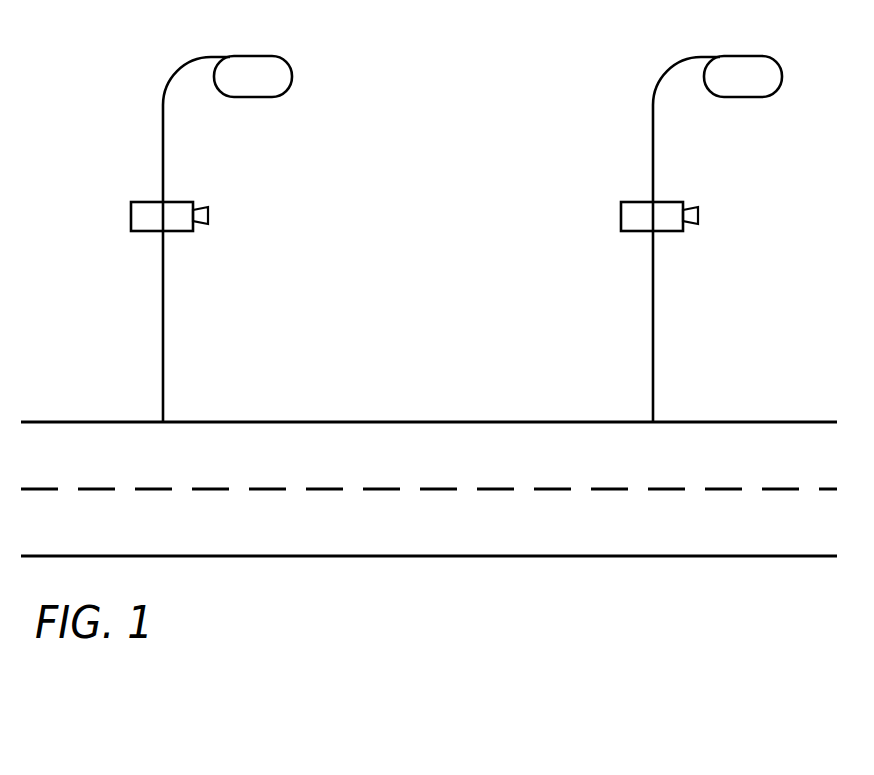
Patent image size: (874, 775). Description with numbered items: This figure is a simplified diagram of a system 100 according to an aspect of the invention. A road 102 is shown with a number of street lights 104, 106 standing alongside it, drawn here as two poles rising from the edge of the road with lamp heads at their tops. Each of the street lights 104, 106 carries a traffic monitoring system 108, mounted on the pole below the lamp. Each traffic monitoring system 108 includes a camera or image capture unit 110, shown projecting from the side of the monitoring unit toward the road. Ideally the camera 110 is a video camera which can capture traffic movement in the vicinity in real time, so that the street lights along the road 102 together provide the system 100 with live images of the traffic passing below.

The system 100 is at (114, 49).
The road 102 is at (415, 420).
The street light 104 is at (163, 332).
The street light 106 is at (653, 332).
The traffic monitoring system 108 is at (180, 231).
The camera or image capture unit 110 is at (208, 207).